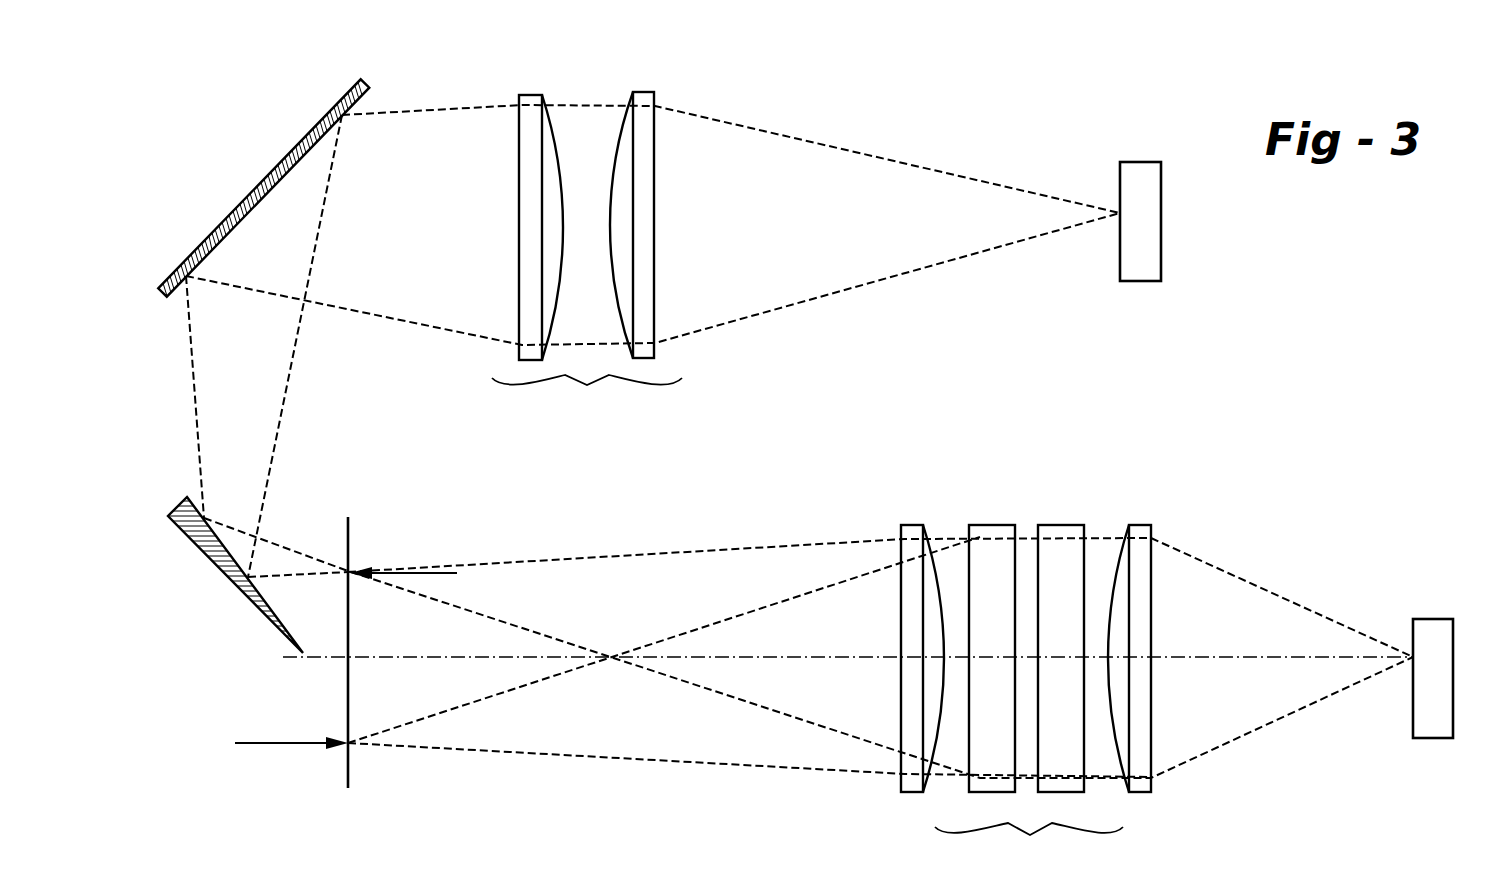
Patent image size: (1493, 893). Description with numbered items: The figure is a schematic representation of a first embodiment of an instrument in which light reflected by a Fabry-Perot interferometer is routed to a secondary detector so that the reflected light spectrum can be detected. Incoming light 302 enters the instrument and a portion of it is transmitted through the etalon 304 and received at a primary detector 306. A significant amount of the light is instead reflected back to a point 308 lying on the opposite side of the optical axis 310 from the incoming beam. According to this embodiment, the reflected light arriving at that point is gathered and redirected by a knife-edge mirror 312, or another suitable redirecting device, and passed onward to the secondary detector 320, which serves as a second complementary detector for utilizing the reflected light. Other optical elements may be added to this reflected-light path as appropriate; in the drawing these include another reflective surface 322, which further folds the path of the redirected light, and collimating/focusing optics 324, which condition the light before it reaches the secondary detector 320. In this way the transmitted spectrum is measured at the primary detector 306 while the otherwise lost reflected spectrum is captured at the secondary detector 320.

The incoming light 302 is at (292, 741).
The etalon 304 is at (1026, 698).
The primary detector 306 is at (1441, 631).
The point 308 is at (348, 532).
The optical axis 310 is at (1247, 659).
The knife-edge mirror 312 is at (210, 562).
The secondary detector 320 is at (1148, 177).
The reflective surface 322 is at (283, 158).
The collimating/focusing optics 324 is at (587, 259).